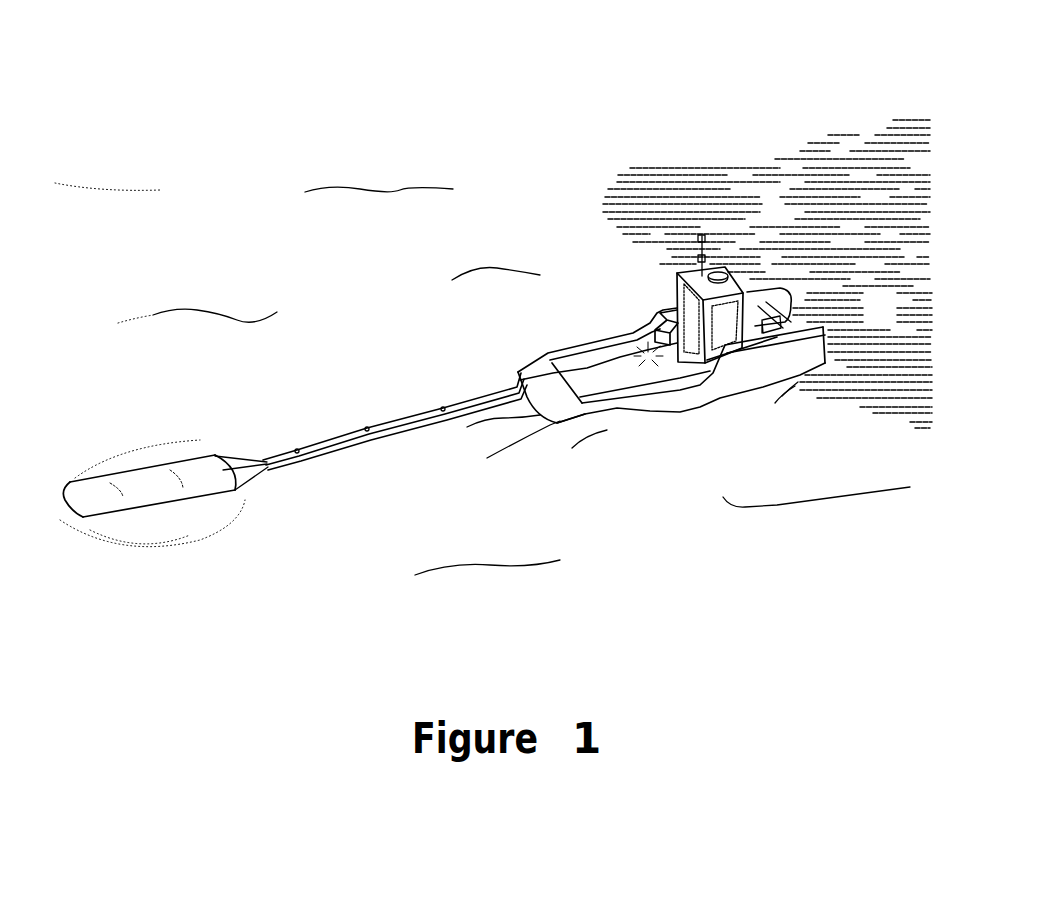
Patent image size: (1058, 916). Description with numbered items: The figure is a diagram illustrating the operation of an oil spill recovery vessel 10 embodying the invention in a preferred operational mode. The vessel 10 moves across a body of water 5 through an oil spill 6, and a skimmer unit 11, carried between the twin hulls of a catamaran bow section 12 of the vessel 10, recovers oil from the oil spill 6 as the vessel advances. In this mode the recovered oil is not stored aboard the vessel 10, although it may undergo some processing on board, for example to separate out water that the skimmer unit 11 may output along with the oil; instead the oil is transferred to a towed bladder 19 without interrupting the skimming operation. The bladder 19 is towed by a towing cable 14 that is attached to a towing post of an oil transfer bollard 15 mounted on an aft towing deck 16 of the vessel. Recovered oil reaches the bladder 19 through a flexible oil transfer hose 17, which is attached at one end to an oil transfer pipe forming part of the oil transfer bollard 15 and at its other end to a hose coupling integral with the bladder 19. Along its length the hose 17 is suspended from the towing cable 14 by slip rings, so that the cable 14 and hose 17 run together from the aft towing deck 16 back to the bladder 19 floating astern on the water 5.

The body of water 5 is at (312, 286).
The oil spill 6 is at (743, 157).
The oil spill recovery vessel 10 is at (640, 301).
The skimmer unit 11 is at (768, 333).
The catamaran bow section 12 is at (826, 312).
The towing cable 14 is at (407, 417).
The oil transfer bollard 15 is at (648, 364).
The aft towing deck 16 is at (610, 386).
The flexible oil transfer hose 17 is at (415, 430).
The towed bladder 19 is at (178, 467).